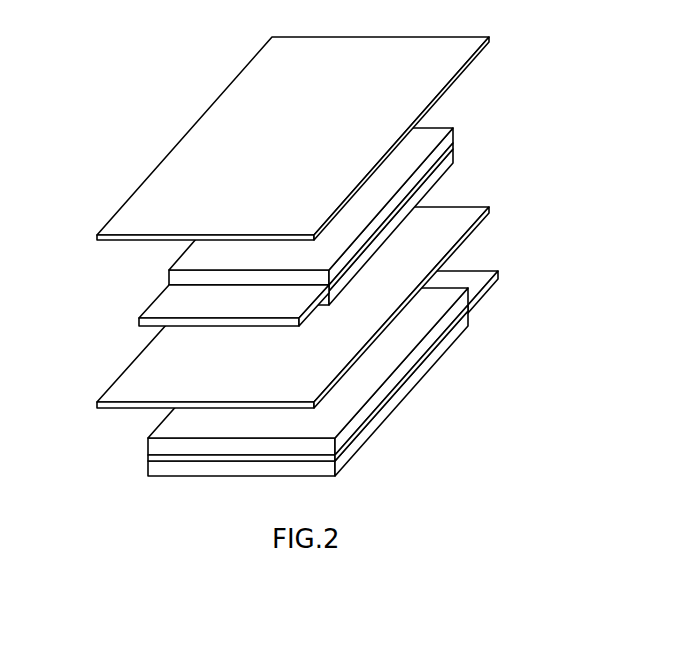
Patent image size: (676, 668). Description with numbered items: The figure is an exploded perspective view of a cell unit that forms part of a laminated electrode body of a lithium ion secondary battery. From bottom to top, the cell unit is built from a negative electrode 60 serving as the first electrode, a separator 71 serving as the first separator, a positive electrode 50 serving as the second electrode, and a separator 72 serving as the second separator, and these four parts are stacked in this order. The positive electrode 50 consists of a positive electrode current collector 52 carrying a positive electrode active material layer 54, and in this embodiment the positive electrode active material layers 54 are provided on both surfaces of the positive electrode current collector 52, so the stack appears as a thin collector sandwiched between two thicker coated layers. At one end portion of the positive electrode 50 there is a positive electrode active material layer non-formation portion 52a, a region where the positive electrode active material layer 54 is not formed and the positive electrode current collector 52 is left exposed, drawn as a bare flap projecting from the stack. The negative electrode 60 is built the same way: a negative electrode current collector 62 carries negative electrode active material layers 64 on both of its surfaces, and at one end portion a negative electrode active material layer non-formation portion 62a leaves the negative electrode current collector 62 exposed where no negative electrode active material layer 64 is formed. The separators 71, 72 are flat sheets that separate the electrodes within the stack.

The positive electrode 50 is at (293, 205).
The positive electrode current collector 52 is at (457, 148).
The positive electrode active material layer non-formation portion 52a is at (167, 316).
The positive electrode active material layer 54 is at (425, 135).
The negative electrode 60 is at (285, 399).
The negative electrode current collector 62 is at (148, 458).
The negative electrode active material layer non-formation portion 62a is at (470, 273).
The negative electrode active material layer 64 is at (148, 447).
The separator 71 is at (137, 372).
The separator 72 is at (170, 178).